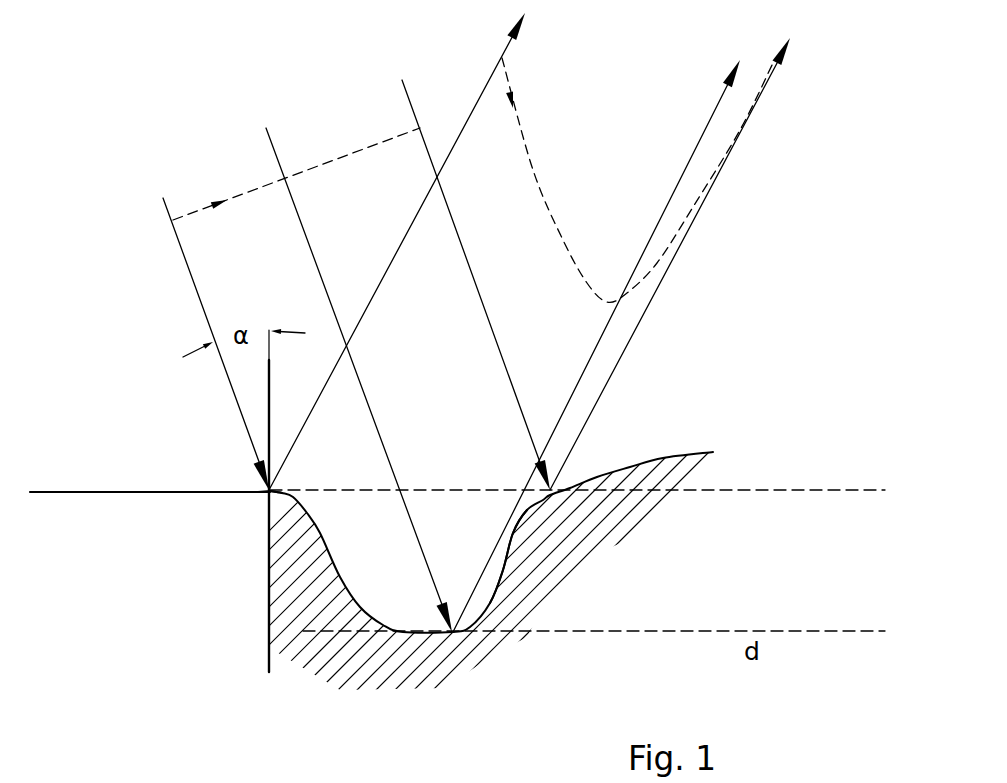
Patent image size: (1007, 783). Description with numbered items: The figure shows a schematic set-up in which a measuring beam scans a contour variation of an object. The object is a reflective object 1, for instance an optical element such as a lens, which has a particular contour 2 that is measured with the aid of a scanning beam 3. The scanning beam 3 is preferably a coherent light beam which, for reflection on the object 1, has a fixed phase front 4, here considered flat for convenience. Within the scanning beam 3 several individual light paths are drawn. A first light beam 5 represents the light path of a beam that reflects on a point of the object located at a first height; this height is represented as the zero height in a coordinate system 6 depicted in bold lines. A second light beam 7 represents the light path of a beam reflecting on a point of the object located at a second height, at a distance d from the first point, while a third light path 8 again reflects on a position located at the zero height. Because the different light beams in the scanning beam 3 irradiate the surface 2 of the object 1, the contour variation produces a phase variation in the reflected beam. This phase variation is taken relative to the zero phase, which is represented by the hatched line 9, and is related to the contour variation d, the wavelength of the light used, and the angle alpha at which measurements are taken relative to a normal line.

The reflective object 1 is at (481, 677).
The contour 2 is at (512, 558).
The scanning beam 3 is at (343, 115).
The phase front 4 is at (255, 175).
The first light beam 5 is at (190, 278).
The coordinate system 6 is at (240, 536).
The second light beam 7 is at (313, 259).
The third light path 8 is at (483, 305).
The hatched line 9 is at (540, 164).